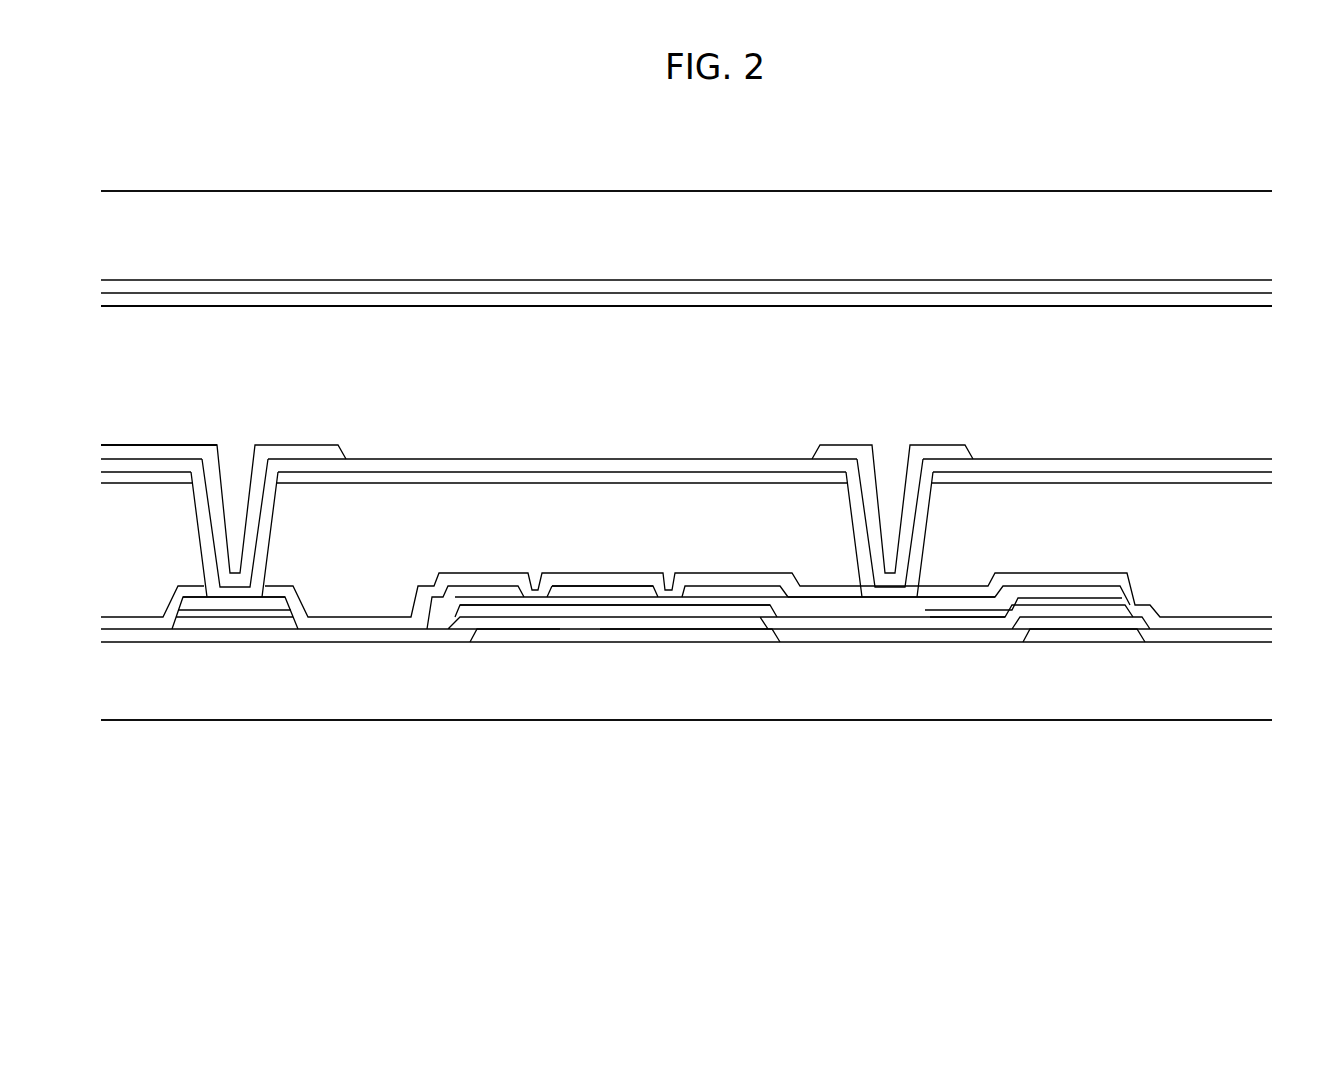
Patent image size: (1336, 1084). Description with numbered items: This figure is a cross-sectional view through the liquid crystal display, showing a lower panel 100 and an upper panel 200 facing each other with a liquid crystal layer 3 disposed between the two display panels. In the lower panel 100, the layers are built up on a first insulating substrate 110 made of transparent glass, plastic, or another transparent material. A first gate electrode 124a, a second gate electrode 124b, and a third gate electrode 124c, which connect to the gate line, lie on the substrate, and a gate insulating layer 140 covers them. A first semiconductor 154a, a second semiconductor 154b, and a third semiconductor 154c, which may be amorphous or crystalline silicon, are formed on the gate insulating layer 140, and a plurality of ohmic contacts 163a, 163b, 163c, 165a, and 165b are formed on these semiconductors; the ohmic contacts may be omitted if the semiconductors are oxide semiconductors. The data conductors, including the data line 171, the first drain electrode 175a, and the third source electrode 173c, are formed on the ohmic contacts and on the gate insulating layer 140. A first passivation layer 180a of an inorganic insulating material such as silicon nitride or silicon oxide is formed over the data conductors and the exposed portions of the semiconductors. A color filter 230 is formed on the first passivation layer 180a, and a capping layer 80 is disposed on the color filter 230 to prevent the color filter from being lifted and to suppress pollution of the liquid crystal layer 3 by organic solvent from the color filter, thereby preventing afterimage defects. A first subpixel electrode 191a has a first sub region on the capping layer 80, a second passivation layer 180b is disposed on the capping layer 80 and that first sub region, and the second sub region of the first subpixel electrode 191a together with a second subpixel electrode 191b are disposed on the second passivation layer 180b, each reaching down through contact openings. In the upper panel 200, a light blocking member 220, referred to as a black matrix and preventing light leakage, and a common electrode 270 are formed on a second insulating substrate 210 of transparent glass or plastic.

The upper panel 200 is at (1272, 192).
The second insulating substrate 210 is at (1032, 215).
The light blocking member 220 is at (925, 285).
The common electrode 270 is at (812, 300).
The liquid crystal layer 3 is at (1272, 309).
The lower panel 100 is at (1272, 447).
The first insulating substrate 110 is at (1170, 695).
The first gate electrode 124a is at (510, 638).
The second gate electrode 124b is at (672, 638).
The third gate electrode 124c is at (1118, 640).
The gate insulating layer 140 is at (858, 640).
The first semiconductor 154a is at (190, 624).
The second semiconductor 154b is at (820, 632).
The third semiconductor 154c is at (1055, 614).
The ohmic contact 163a is at (485, 632).
The ohmic contact 163b is at (640, 605).
The ohmic contact 163c is at (1080, 605).
The ohmic contact 165a is at (233, 614).
The ohmic contact 165b is at (752, 602).
The data line 171 is at (433, 606).
The third source electrode 173c is at (945, 605).
The first drain electrode 175a is at (272, 604).
The first passivation layer 180a is at (1235, 624).
The second passivation layer 180b is at (1200, 465).
The color filter 230 is at (1065, 512).
The capping layer 80 is at (1138, 478).
The first subpixel electrode 191a is at (305, 458).
The second subpixel electrode 191b is at (832, 455).